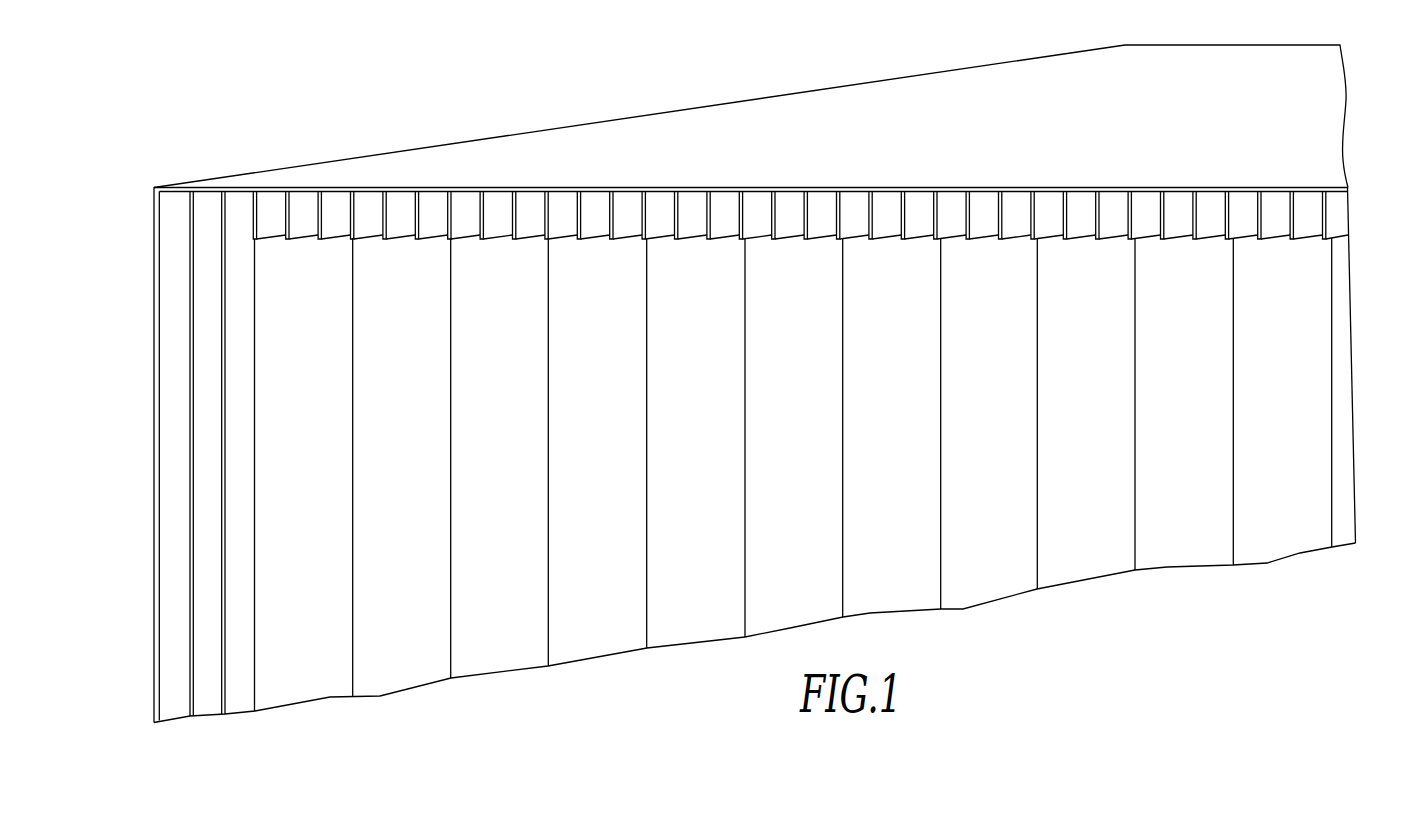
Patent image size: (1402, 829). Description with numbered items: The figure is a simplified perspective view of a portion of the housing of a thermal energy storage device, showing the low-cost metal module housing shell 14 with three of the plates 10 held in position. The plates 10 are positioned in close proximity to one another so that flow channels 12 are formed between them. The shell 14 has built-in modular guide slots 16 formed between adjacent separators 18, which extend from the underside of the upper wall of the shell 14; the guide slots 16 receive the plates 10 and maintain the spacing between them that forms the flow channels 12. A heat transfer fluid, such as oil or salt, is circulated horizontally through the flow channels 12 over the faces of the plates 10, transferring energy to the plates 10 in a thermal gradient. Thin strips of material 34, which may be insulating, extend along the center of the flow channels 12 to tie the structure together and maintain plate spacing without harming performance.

The plates 10 is at (202, 623).
The flow channels 12 is at (223, 191).
The module housing shell 14 is at (822, 102).
The guide slots 16 is at (330, 202).
The separators 18 is at (433, 203).
The thin strips of material 34 is at (190, 365).